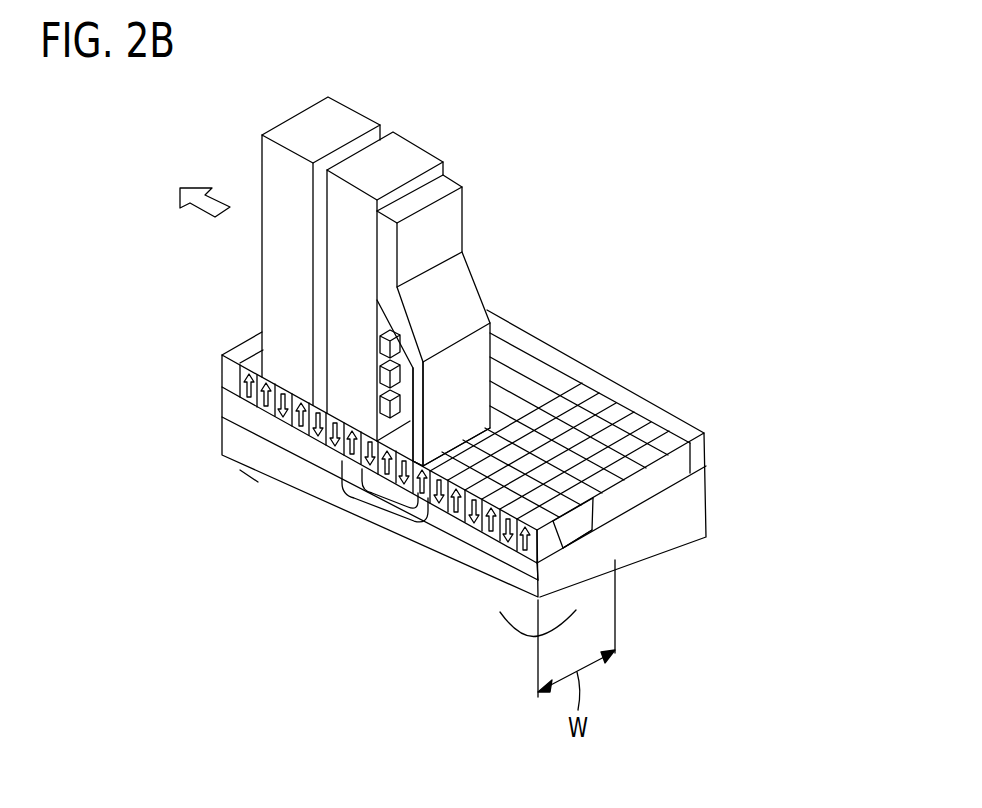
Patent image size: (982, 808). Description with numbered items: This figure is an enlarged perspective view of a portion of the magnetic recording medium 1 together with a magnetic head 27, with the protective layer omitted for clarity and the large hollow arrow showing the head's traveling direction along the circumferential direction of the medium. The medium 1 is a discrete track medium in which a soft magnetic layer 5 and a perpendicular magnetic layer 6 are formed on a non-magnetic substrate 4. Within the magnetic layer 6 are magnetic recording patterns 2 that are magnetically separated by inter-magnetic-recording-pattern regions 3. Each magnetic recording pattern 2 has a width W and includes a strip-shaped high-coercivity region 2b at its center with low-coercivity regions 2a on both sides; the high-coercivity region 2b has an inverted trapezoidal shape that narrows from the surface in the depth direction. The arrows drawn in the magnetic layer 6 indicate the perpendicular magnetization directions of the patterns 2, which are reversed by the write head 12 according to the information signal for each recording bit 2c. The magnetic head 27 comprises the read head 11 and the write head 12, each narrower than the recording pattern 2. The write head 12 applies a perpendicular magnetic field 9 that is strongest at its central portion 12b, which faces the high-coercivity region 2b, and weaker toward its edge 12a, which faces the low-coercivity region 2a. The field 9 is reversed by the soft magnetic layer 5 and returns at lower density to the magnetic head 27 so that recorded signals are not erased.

The magnetic recording medium 1 is at (311, 584).
The magnetic recording pattern 2 is at (757, 520).
The low-coercivity region 2a is at (700, 453).
The high-coercivity region 2b is at (575, 528).
The recording bit 2c is at (481, 534).
The inter-magnetic-recording-pattern region 3 is at (655, 483).
The non-magnetic substrate 4 is at (247, 467).
The soft magnetic layer 5 is at (298, 449).
The magnetic layer 6 is at (457, 524).
The magnetic field 9 is at (364, 499).
The read head 11 is at (308, 352).
The write head 12 is at (652, 248).
The edge 12a is at (427, 454).
The central portion 12b is at (457, 444).
The magnetic head 27 is at (429, 267).